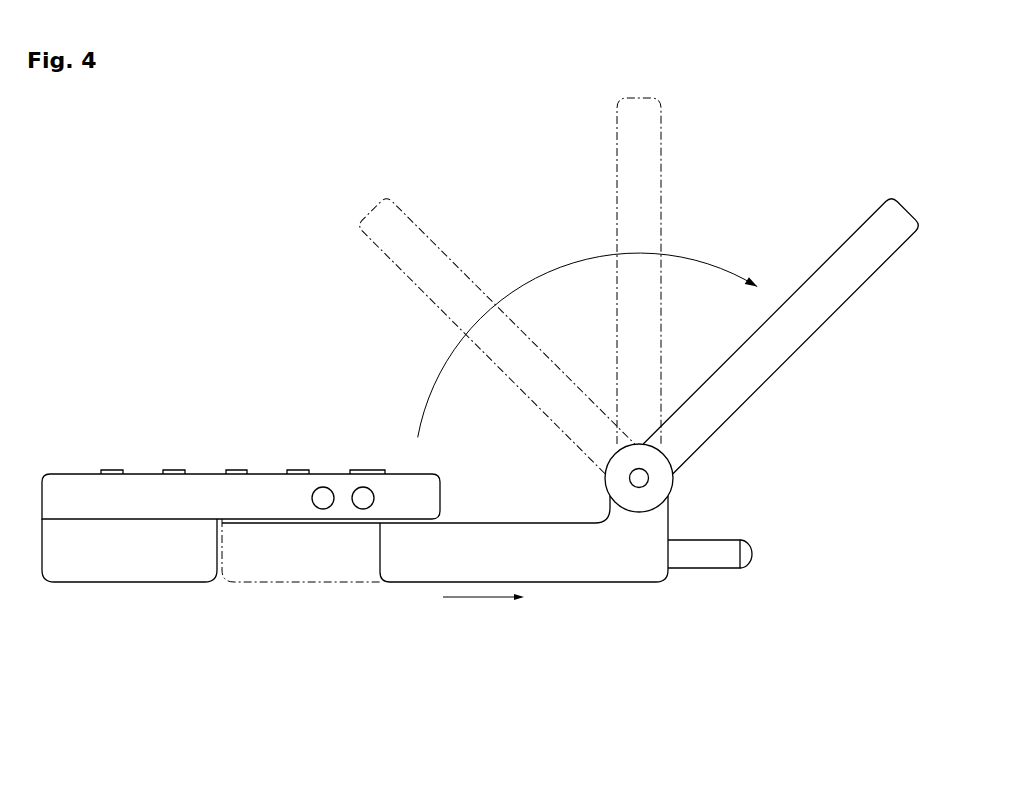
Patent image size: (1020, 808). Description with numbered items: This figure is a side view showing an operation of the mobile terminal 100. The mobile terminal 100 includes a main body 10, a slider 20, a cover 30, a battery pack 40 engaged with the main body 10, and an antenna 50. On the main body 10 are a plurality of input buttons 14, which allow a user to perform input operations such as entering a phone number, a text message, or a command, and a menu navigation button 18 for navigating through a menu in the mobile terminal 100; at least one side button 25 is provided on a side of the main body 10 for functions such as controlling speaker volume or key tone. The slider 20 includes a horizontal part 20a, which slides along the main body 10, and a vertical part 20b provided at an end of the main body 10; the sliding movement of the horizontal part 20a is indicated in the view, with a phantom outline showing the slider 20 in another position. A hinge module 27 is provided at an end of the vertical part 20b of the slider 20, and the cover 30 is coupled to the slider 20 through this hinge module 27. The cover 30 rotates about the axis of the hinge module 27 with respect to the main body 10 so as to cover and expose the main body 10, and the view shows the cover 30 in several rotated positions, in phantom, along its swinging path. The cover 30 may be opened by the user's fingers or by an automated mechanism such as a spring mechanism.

The mobile terminal 100 is at (177, 177).
The main body 10 is at (72, 492).
The input buttons 14 is at (110, 470).
The menu navigation button 18 is at (363, 476).
The side button 25 is at (322, 487).
The battery pack 40 is at (86, 563).
The slider 20 is at (598, 655).
The horizontal part 20a is at (587, 562).
The vertical part 20b is at (662, 538).
The hinge module 27 is at (650, 478).
The cover 30 is at (780, 353).
The antenna 50 is at (727, 562).